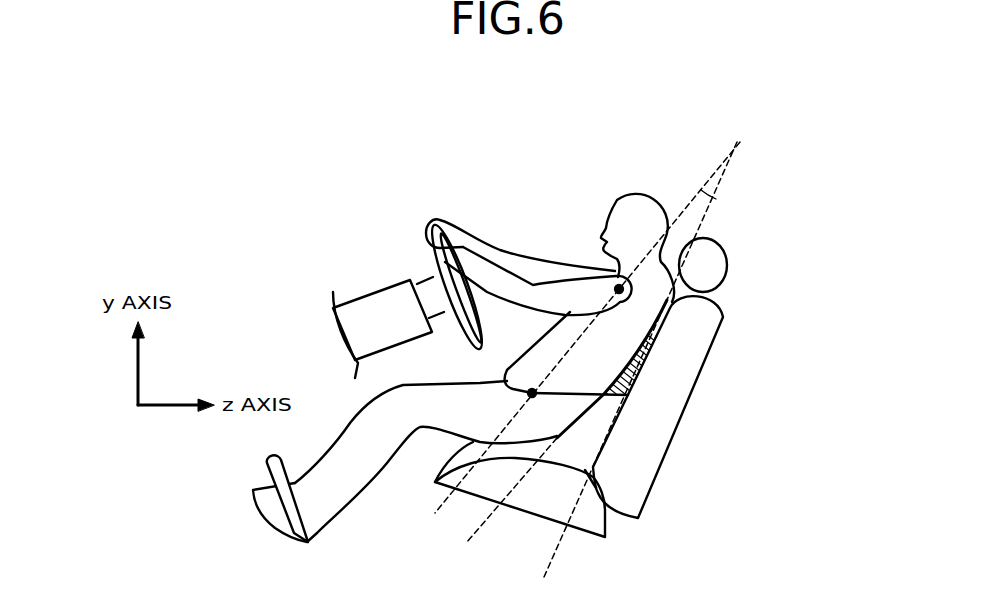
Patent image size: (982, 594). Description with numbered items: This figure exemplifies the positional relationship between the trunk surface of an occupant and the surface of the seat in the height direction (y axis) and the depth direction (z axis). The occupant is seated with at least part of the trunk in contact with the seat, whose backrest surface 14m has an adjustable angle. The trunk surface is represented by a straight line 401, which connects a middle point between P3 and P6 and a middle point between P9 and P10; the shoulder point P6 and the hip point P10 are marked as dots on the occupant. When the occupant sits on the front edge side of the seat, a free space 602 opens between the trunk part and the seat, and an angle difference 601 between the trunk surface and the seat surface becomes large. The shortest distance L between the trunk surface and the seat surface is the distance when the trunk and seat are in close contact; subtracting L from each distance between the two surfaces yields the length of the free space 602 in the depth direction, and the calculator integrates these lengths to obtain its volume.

The straight line 401 is at (578, 338).
The free space 602 is at (635, 380).
The backrest surface 14m is at (637, 375).
The shortest distance L is at (595, 321).
The angle difference 601 is at (715, 203).
The element P6 is at (620, 287).
The element P10 is at (532, 393).